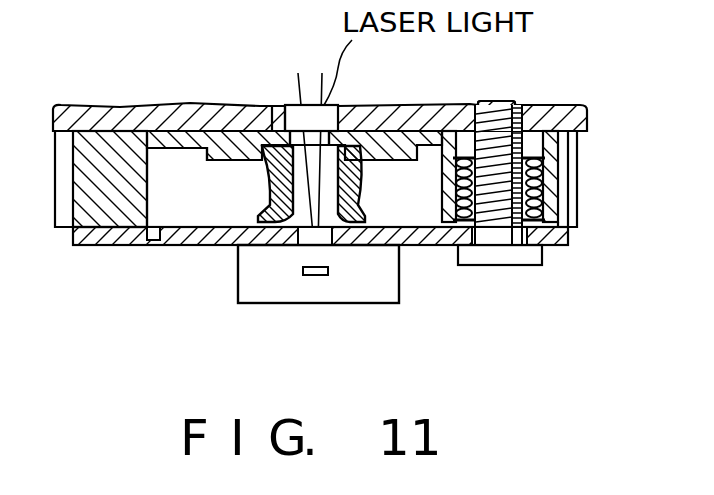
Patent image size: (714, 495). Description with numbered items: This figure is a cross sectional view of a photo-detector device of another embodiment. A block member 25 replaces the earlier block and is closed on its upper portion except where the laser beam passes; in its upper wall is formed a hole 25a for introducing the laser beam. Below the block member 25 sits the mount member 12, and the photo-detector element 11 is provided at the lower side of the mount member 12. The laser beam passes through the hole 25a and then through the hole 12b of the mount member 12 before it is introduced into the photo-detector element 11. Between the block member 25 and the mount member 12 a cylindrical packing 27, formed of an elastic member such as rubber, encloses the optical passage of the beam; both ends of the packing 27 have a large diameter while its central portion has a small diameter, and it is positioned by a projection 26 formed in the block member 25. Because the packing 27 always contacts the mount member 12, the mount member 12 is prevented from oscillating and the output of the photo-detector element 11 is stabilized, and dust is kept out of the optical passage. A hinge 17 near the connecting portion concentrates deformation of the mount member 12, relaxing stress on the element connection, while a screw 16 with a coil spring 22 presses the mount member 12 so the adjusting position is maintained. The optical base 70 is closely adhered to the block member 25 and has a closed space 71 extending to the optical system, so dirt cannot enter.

The photo-detector element 11 is at (380, 304).
The mount member 12 is at (192, 247).
The hole 12b is at (303, 247).
The screw 16 is at (500, 118).
The hinge 17 is at (155, 246).
The coil spring 22 is at (546, 167).
The block member 25 is at (117, 138).
The hole 25a is at (338, 112).
The projection 26 is at (213, 161).
The cylindrical packing 27 is at (356, 192).
The optical base 70 is at (187, 108).
The closed space 71 is at (283, 108).